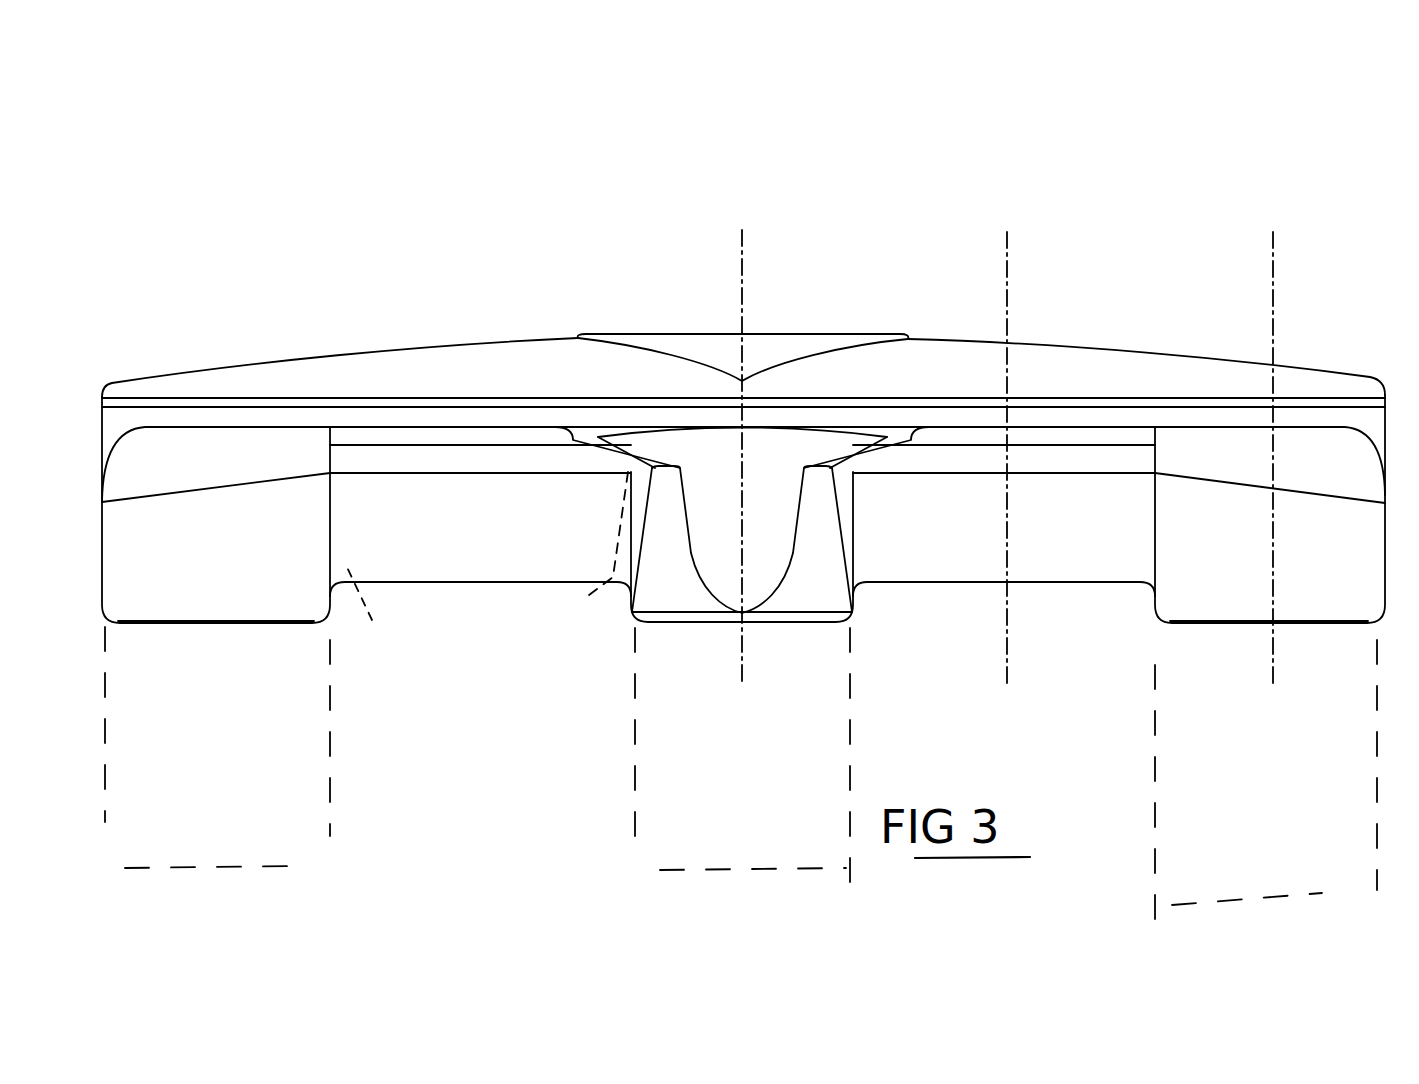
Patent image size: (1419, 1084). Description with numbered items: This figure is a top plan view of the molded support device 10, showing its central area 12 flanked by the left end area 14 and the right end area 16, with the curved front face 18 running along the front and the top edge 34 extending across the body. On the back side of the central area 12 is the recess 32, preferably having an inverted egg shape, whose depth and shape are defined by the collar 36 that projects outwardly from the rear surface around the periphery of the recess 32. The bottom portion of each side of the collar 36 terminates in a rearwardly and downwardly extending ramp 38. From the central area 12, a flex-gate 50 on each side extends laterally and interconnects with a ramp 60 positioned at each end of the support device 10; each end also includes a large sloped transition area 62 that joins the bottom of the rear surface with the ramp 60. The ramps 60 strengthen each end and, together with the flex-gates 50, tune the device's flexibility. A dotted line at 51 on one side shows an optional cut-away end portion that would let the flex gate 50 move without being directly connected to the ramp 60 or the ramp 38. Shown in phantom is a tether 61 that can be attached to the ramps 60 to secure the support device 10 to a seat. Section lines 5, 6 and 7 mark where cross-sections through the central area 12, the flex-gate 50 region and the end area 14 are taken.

The support device 10 is at (420, 247).
The central area 12 is at (640, 316).
The left end area 14 is at (1340, 357).
The right end area 16 is at (174, 355).
The front face 18 is at (486, 378).
The top edge 34 is at (1090, 397).
The sloped transition area 62 is at (210, 472).
The flex-gate 50 is at (446, 558).
The collar 36 is at (905, 442).
The recess 32 is at (657, 447).
The ramp 38 is at (663, 584).
The cut away end portion 51 is at (486, 566).
The ramp 60 is at (217, 619).
The tether 61 is at (334, 752).
The section line 5- 5 is at (742, 230).
The section line 6- 6 is at (1007, 232).
The section line 7- 7 is at (1273, 232).